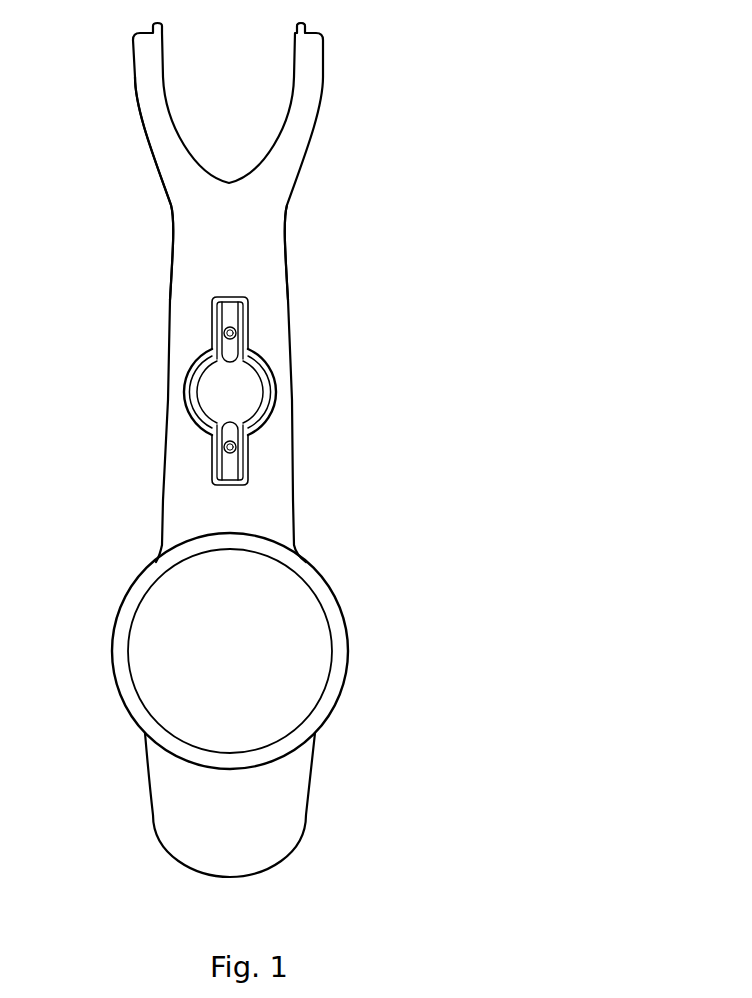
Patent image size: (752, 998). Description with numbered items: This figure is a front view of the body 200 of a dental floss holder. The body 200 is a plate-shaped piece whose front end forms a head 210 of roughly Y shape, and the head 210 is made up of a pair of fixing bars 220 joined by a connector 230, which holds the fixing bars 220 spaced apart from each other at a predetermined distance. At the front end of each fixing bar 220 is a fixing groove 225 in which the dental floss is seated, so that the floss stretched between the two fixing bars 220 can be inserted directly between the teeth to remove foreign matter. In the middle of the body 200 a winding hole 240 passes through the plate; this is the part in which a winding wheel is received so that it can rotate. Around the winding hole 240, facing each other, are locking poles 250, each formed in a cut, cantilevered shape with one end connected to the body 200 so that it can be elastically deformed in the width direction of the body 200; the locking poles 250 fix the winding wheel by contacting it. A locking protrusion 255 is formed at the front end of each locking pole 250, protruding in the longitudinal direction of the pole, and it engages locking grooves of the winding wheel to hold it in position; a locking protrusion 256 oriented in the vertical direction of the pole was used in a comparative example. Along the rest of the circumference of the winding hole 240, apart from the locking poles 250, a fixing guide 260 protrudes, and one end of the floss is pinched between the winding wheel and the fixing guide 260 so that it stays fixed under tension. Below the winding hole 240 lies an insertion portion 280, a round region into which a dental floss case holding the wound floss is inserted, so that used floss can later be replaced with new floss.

The body 200 is at (244, 450).
The head 210 is at (233, 292).
The fixing bar 220 is at (140, 121).
The fixing groove 225 is at (306, 40).
The connector 230 is at (228, 213).
The winding hole 240 is at (232, 384).
The locking pole 250 is at (224, 466).
The locking protrusion 255 is at (234, 428).
The locking protrusion 256 is at (222, 441).
The fixing guide 260 is at (184, 391).
The insertion portion 280 is at (232, 637).